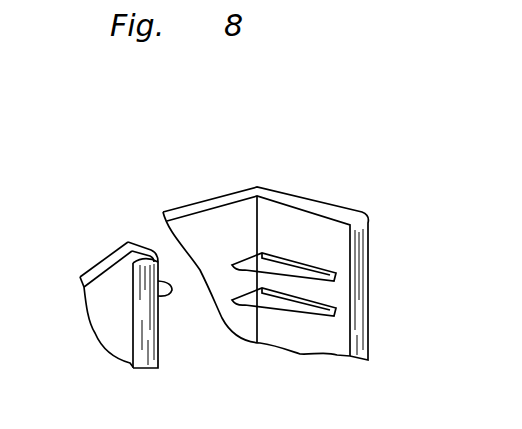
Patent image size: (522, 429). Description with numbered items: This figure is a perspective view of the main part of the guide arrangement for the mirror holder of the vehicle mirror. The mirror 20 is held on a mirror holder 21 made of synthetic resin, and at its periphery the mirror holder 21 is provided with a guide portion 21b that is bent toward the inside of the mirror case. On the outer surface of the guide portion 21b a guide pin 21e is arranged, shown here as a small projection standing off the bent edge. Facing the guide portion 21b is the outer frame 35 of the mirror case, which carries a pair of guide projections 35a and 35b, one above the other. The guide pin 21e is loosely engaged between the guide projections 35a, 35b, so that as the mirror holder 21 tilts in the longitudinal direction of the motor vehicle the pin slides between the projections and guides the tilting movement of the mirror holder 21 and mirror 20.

The mirror 20 is at (102, 310).
The mirror holder 21 is at (97, 257).
The guide portion 21b is at (147, 243).
The guide pin 21e is at (167, 291).
The outer frame 35 is at (308, 188).
The guide projection 35a is at (297, 267).
The guide projection 35b is at (328, 312).